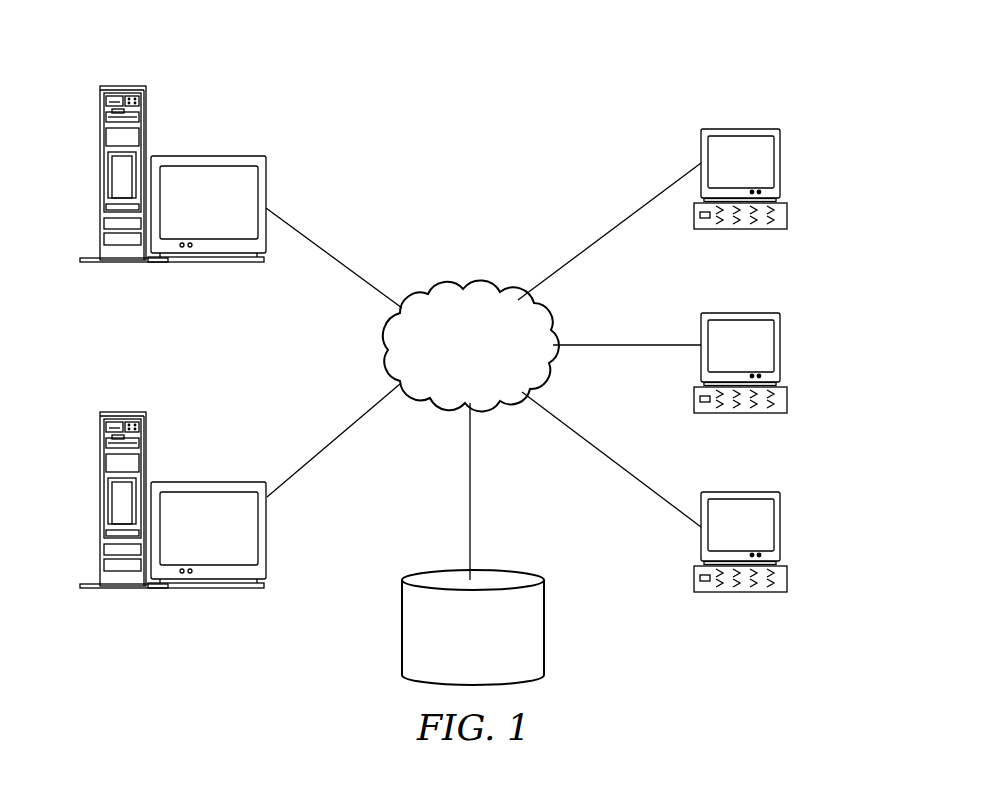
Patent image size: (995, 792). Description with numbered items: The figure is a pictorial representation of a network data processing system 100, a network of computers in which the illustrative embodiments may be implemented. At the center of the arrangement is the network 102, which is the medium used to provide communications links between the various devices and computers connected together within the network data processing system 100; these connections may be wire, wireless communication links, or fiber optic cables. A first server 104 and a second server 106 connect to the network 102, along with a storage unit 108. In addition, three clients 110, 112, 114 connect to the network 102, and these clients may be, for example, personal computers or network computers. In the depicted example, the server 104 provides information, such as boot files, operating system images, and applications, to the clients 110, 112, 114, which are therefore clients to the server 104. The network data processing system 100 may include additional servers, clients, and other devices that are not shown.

The network data processing system 100 is at (566, 72).
The network 102 is at (440, 288).
The server 104 is at (100, 172).
The server 106 is at (100, 500).
The storage unit 108 is at (402, 637).
The client 110 is at (780, 162).
The client 112 is at (780, 343).
The client 114 is at (780, 525).